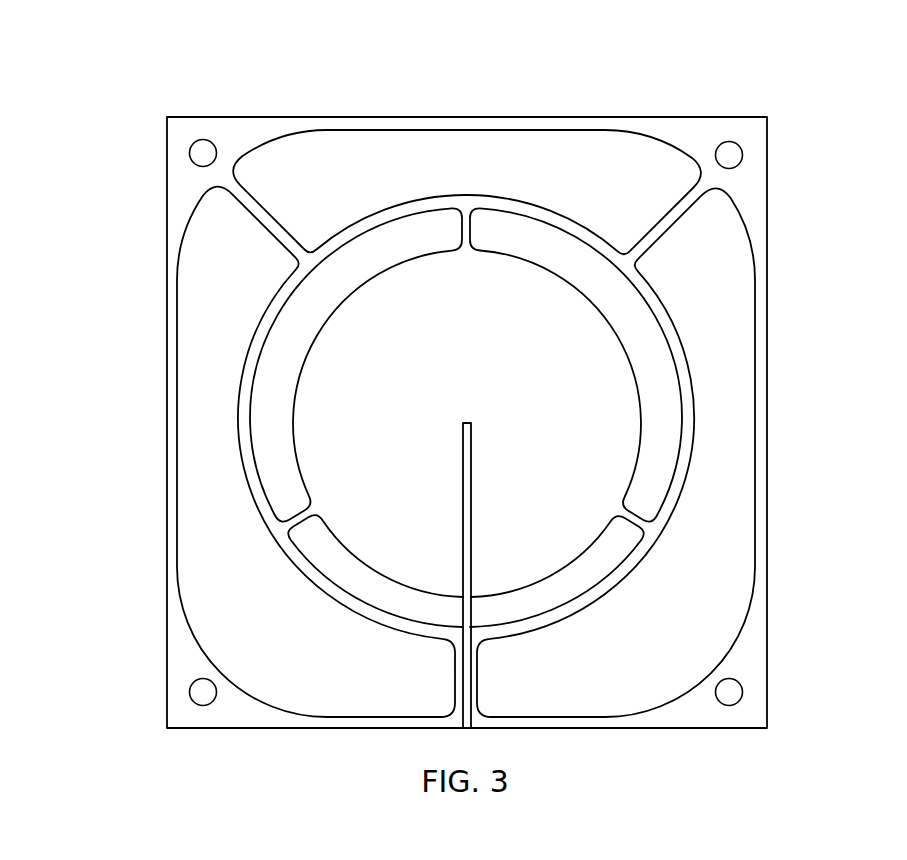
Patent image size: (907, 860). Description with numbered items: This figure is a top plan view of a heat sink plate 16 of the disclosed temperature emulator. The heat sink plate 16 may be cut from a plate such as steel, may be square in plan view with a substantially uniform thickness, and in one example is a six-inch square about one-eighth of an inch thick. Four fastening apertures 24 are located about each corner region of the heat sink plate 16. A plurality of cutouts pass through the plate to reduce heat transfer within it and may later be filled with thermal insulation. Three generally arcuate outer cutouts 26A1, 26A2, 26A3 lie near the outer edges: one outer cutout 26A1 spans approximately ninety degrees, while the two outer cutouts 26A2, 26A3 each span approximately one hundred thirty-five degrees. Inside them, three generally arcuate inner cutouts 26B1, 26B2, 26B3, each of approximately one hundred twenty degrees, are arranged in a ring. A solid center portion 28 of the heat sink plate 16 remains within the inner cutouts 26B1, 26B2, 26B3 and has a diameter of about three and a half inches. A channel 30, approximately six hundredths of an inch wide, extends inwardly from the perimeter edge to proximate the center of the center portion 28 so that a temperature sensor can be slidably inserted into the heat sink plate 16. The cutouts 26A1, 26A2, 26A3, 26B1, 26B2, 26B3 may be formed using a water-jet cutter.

The heat sink plate 16 is at (612, 92).
The fastening apertures 24 is at (203, 139).
The outer cutout 26A1 is at (462, 141).
The outer cutout 26A2 is at (748, 376).
The outer cutout 26A3 is at (186, 376).
The inner cutout 26B1 is at (549, 588).
The inner cutout 26B2 is at (548, 258).
The inner cutout 26B3 is at (390, 257).
The center portion 28 is at (462, 390).
The channel 30 is at (471, 471).